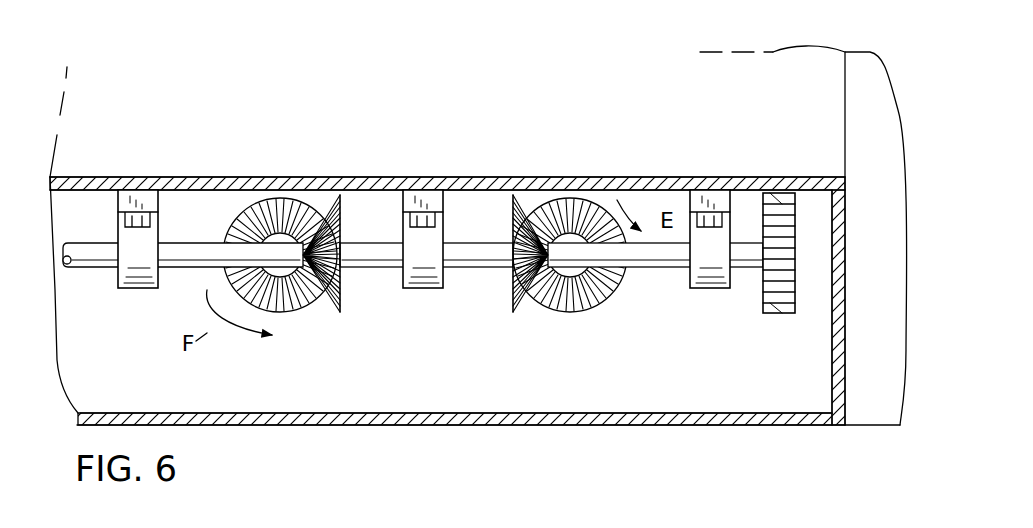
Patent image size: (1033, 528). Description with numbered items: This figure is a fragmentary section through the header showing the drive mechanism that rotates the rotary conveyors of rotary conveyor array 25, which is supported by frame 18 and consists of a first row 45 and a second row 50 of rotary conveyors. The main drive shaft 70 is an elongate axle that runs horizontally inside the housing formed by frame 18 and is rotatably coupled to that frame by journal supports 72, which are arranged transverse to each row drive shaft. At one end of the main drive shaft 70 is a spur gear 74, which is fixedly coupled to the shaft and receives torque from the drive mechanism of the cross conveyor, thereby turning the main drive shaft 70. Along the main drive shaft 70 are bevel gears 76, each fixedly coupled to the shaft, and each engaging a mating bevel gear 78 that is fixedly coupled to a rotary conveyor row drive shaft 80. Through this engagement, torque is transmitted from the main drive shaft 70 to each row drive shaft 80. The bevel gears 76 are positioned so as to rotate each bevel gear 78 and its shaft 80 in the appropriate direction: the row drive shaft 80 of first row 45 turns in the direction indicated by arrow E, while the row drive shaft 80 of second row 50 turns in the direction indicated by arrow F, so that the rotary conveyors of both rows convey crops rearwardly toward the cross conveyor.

The frame 18 is at (683, 175).
The rotary conveyor array 25 is at (668, 155).
The first row 45 is at (639, 150).
The second row 50 is at (193, 155).
The main drive shaft 70 is at (659, 262).
The journal supports 72 is at (138, 289).
The spur gear 74 is at (788, 314).
The bevel gear 76 is at (330, 314).
The bevel gear 78 is at (290, 313).
The rotary conveyor row drive shaft 80 is at (280, 234).